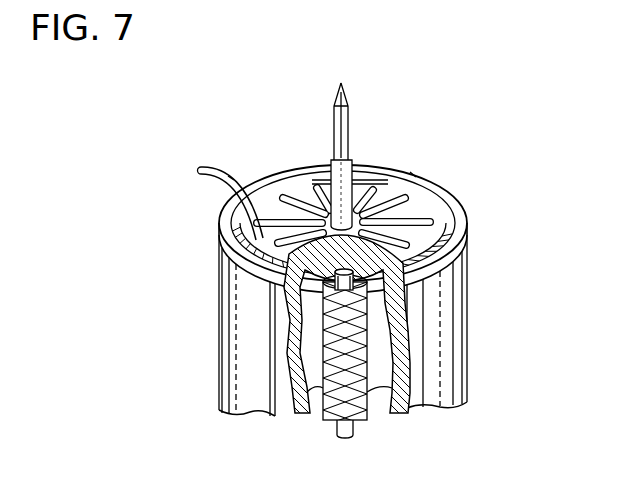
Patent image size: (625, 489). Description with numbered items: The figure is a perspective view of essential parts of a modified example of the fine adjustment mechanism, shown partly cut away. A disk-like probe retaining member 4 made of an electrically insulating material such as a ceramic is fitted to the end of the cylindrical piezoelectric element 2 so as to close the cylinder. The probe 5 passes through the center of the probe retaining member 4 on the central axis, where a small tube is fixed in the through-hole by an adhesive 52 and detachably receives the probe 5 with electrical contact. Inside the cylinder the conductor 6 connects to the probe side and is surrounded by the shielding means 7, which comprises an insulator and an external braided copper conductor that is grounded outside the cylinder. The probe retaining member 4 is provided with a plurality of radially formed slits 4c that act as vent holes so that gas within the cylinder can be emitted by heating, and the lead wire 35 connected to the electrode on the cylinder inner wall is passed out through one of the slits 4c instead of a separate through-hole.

The cylindrical piezoelectric element 2 is at (243, 240).
The probe retaining member 4 is at (390, 278).
The radially formed slits 4c is at (412, 222).
The probe 5 is at (350, 121).
The conductor 6 is at (357, 428).
The shielding means 7 is at (313, 423).
The lead wire 35 is at (205, 166).
The adhesive 52 is at (433, 227).